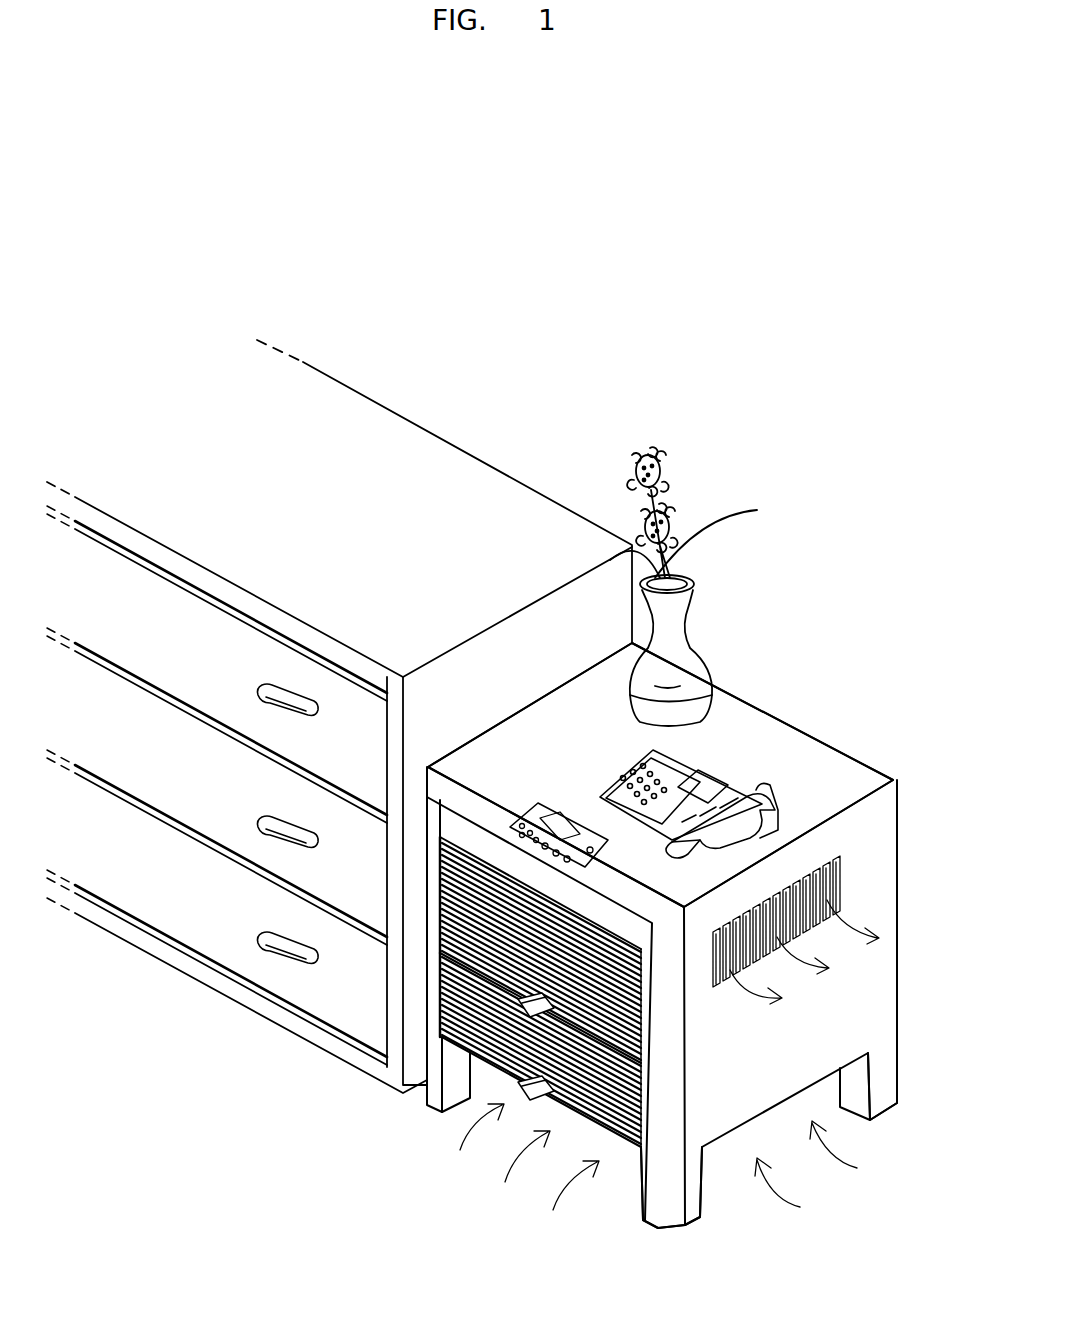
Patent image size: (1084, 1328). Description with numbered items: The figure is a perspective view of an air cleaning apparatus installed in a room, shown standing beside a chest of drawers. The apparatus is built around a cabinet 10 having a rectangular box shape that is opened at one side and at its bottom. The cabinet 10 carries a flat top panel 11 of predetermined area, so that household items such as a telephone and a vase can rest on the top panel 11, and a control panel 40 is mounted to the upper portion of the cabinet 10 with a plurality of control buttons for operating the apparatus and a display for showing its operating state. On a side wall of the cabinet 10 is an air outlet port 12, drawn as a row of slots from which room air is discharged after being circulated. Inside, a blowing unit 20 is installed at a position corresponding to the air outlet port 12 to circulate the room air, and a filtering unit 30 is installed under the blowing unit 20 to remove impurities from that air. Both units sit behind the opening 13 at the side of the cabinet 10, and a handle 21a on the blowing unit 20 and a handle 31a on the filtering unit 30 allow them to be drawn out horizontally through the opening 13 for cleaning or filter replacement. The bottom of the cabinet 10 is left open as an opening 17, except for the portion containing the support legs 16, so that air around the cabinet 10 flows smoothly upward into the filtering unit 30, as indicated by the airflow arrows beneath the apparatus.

The cabinet 10 is at (816, 723).
The top panel 11 is at (742, 723).
The air outlet port 12 is at (827, 883).
The opening 13 is at (490, 975).
The support legs 16 is at (697, 1195).
The opening 17 is at (818, 1085).
The blowing unit 20 is at (440, 920).
The handle 21a is at (525, 1010).
The filtering unit 30 is at (440, 1022).
The handle 31a is at (535, 1092).
The control panel 40 is at (540, 812).